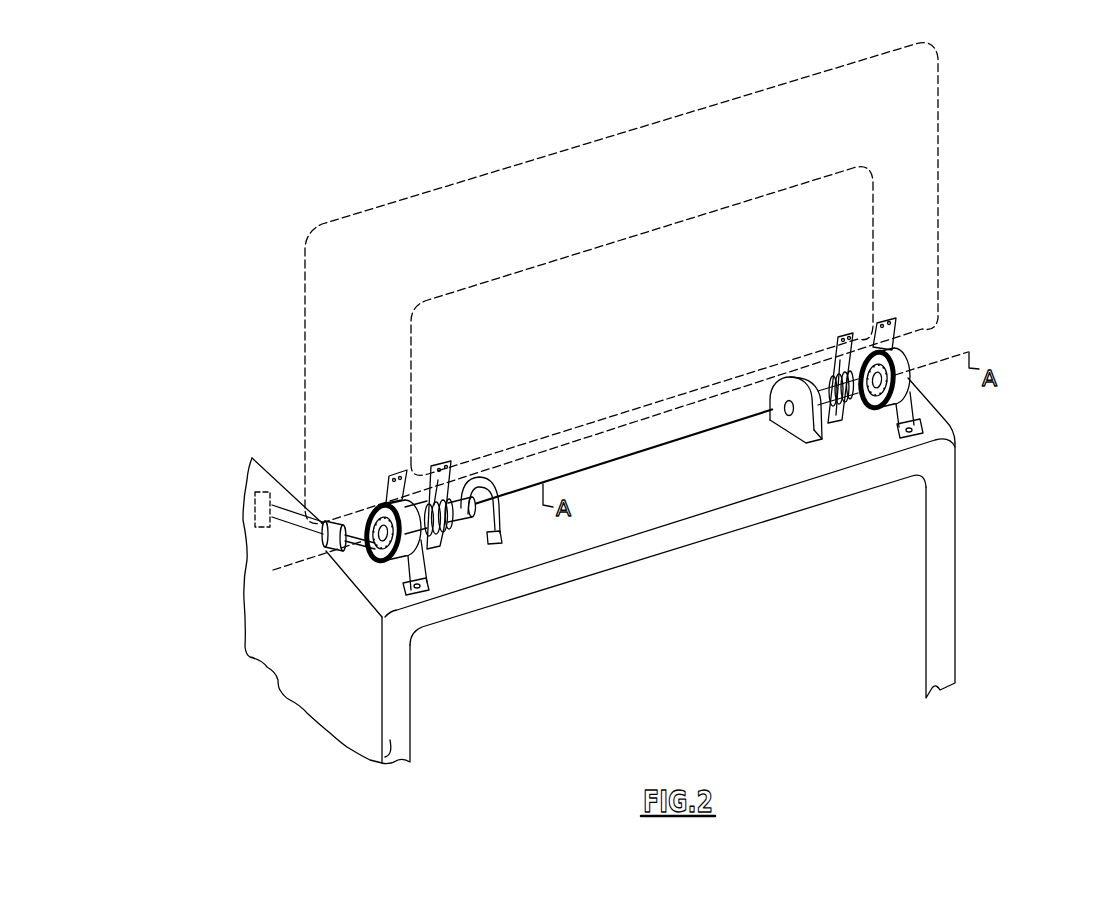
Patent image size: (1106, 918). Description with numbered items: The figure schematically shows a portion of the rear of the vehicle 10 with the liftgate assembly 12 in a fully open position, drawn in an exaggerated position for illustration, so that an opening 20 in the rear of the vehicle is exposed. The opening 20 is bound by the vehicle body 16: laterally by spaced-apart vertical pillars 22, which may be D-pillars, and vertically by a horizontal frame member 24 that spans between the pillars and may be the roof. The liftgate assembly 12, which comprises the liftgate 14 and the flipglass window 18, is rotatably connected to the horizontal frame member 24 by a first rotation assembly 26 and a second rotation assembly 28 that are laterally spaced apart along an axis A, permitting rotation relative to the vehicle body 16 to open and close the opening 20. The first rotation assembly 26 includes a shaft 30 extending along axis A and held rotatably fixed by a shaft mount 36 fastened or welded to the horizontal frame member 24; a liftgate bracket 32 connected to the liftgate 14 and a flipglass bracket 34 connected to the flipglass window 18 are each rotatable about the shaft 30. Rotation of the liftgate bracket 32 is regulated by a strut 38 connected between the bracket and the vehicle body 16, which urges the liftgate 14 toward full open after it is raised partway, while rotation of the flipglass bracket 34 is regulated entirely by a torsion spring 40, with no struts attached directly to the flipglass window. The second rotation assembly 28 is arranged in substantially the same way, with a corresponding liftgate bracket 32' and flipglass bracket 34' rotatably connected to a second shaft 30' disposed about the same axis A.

The vehicle 10 is at (163, 429).
The liftgate assembly 12 is at (1013, 163).
The liftgate 14 is at (923, 110).
The vehicle body 16 is at (317, 698).
The flipglass window 18 is at (823, 233).
The opening 20 is at (692, 660).
The vertical pillars 22 is at (940, 598).
The horizontal frame member 24 is at (690, 530).
The first rotation assembly 26 is at (596, 536).
The second rotation assembly 28 is at (795, 460).
The shaft 30 is at (459, 539).
The second shaft 30' is at (856, 432).
The liftgate bracket 32 is at (371, 504).
The liftgate bracket 32' is at (937, 390).
The flipglass bracket 34 is at (390, 501).
The flipglass bracket 34' is at (932, 408).
The shaft mount 36 is at (482, 518).
The strut 38 is at (296, 518).
The torsion spring 40 is at (450, 483).